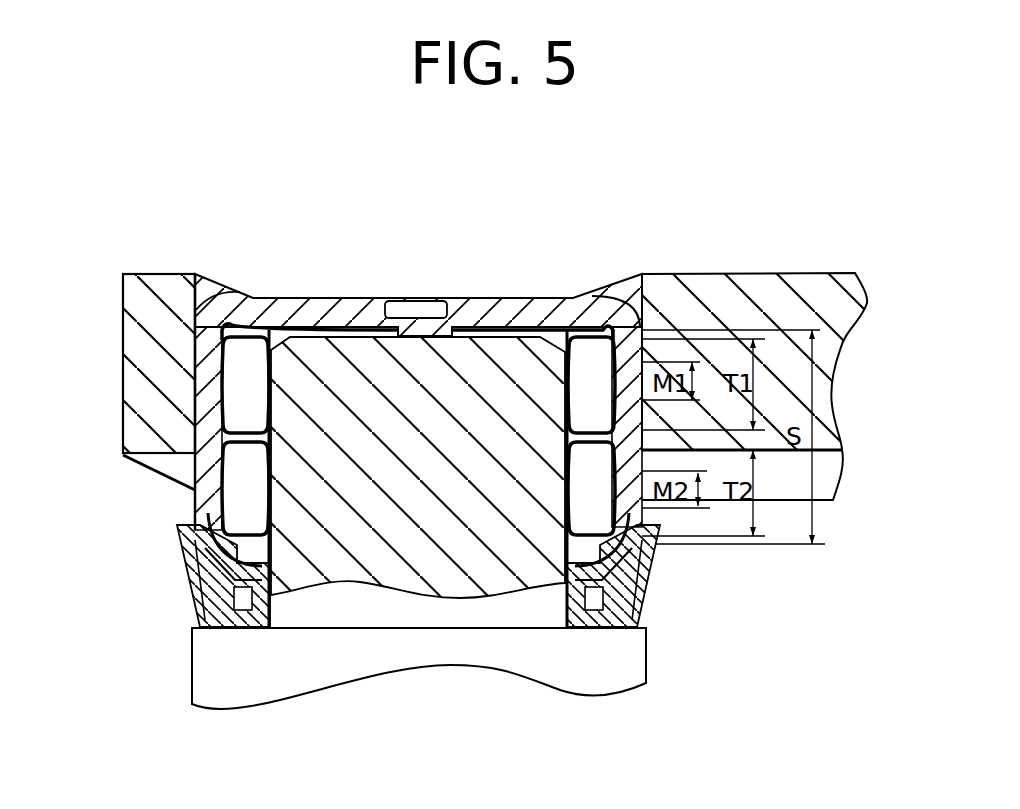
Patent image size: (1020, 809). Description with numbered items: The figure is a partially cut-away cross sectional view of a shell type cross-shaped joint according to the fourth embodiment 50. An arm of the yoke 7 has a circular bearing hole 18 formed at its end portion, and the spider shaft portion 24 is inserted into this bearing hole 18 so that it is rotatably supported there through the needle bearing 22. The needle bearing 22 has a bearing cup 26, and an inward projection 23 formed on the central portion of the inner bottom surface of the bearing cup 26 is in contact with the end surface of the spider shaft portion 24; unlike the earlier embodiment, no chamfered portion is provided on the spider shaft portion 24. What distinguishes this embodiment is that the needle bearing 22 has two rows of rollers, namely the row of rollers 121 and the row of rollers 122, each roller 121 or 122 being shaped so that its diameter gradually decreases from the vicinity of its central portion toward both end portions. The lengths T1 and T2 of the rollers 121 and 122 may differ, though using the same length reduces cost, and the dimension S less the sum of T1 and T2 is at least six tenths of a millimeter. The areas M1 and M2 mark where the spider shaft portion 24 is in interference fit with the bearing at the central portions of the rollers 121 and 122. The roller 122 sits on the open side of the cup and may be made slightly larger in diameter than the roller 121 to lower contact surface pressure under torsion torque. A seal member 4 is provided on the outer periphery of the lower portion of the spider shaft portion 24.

The seal member 4 is at (190, 563).
The yoke 7 is at (712, 283).
The bearing hole 18 is at (630, 282).
The needle bearing 22 is at (430, 355).
The inward projection 23 is at (455, 362).
The spider shaft portion 24 is at (240, 502).
The bearing cup 26 is at (280, 307).
The fourth embodiment 50 is at (360, 443).
The roller 121 is at (242, 385).
The roller 122 is at (293, 465).